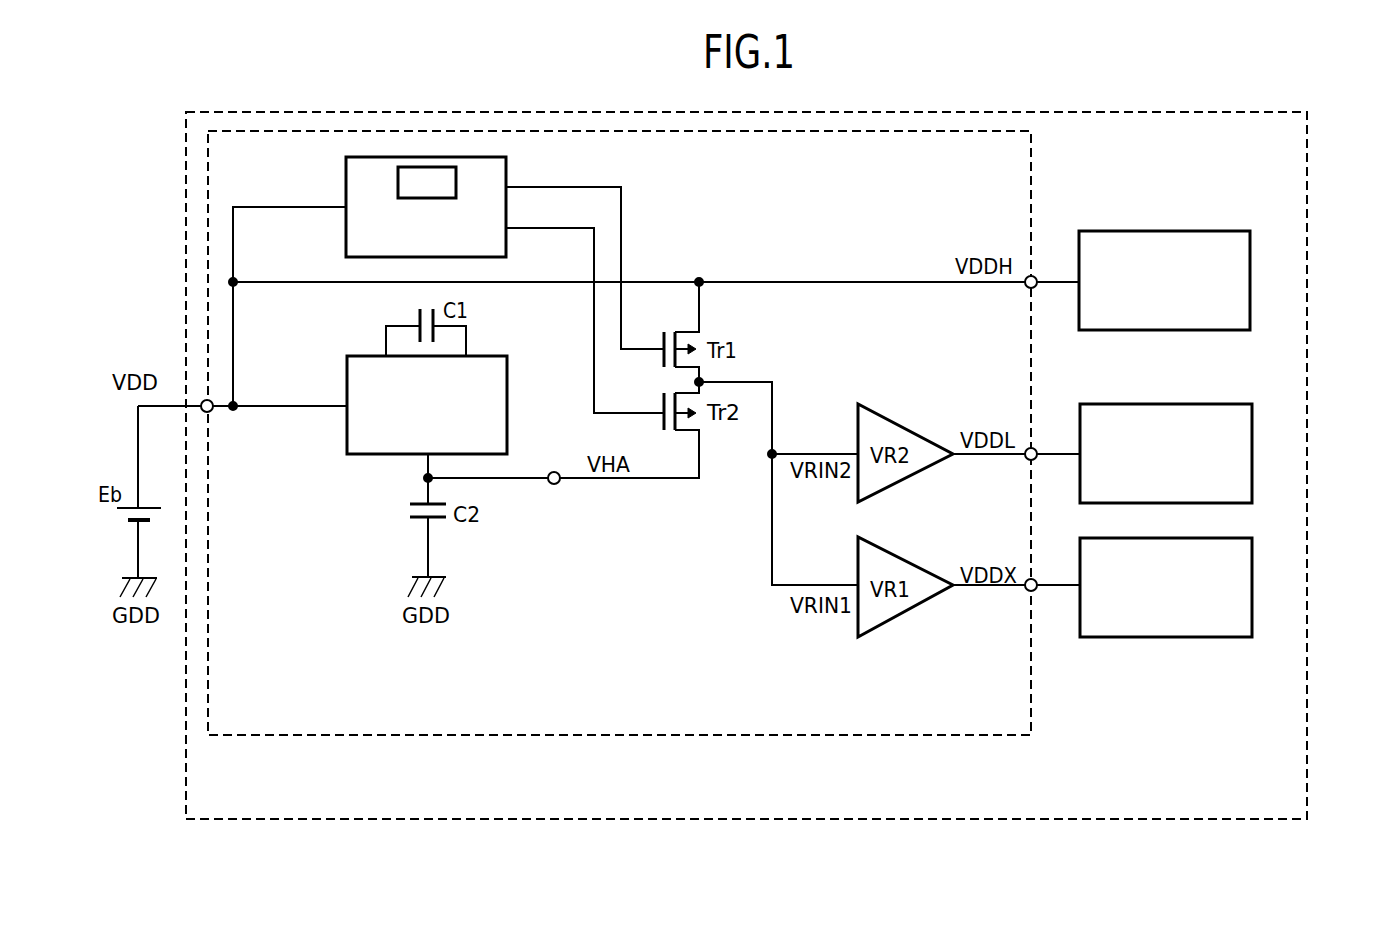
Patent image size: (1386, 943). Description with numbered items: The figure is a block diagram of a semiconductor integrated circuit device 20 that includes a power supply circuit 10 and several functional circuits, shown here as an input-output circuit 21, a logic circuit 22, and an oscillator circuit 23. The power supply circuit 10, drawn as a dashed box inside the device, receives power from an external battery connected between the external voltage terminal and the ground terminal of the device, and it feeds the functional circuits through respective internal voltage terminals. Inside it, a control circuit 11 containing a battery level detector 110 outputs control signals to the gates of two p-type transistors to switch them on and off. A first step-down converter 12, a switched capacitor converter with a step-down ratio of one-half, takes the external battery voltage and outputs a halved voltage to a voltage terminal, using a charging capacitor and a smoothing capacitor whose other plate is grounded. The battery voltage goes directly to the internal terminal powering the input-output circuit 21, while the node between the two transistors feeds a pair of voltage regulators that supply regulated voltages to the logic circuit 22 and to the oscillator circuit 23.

The power supply circuit 10 is at (1031, 165).
The control circuit 11 is at (506, 163).
The battery level detector 110 is at (398, 185).
The first step-down converter 12 is at (507, 376).
The semiconductor integrated circuit device 20 is at (1307, 147).
The input-output (I/O) circuit 21 is at (1205, 231).
The logic circuit 22 is at (1205, 404).
The oscillator circuit 23 is at (1205, 538).